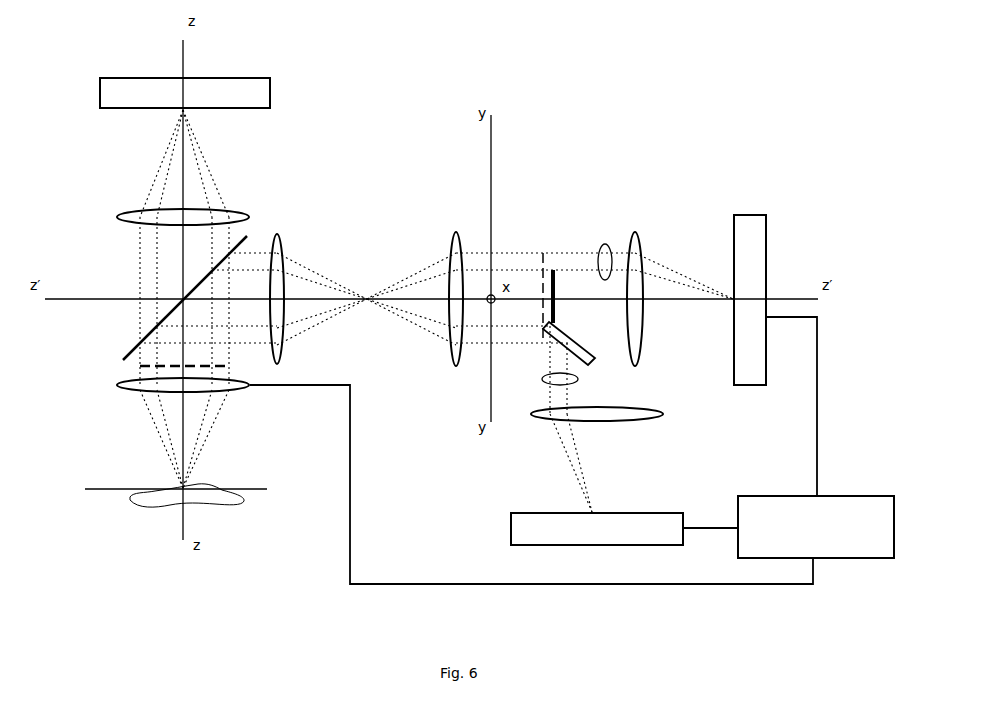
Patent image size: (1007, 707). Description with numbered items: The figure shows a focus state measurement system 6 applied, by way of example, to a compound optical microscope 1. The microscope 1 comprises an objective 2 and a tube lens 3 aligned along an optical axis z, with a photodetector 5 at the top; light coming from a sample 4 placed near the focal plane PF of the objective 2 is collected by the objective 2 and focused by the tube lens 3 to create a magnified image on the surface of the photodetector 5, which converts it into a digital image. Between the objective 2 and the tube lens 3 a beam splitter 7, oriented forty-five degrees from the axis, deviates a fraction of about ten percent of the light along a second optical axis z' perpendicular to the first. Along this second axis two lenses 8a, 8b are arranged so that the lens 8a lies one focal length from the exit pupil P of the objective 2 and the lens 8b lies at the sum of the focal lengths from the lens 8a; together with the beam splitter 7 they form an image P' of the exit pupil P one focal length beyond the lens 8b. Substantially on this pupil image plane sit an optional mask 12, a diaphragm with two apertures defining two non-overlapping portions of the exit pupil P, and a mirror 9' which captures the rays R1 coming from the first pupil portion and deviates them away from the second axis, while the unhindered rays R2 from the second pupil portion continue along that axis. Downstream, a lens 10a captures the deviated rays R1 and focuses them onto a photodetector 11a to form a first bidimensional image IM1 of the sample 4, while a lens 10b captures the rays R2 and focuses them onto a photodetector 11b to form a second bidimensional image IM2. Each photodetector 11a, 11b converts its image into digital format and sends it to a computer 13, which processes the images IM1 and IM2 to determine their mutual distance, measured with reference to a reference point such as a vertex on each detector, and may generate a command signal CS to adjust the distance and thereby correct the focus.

The optical microscope 1 is at (66, 62).
The objective 2 is at (120, 386).
The tube lens 3 is at (133, 210).
The sample 4 is at (130, 503).
The photodetector 5 is at (98, 93).
The focus state measurement system 6 is at (586, 143).
The beam splitter 7 is at (130, 352).
The first lens 8a is at (283, 246).
The first lens 8b is at (452, 241).
The mirror 9' is at (576, 340).
The lens 10a is at (643, 419).
The lens 10b is at (640, 236).
The photodetector 11a is at (508, 524).
The photodetector 11b is at (750, 213).
The mask 12 is at (554, 268).
The computer 13 is at (896, 524).
The exit pupil P is at (149, 377).
The image of the exit pupil P' is at (532, 279).
The focal plane PF is at (255, 490).
The rays R1 is at (578, 380).
The rays R2 is at (602, 245).
The first bidimensional image IM1 is at (729, 506).
The second bidimensional image IM2 is at (832, 452).
The command signal CS is at (612, 570).